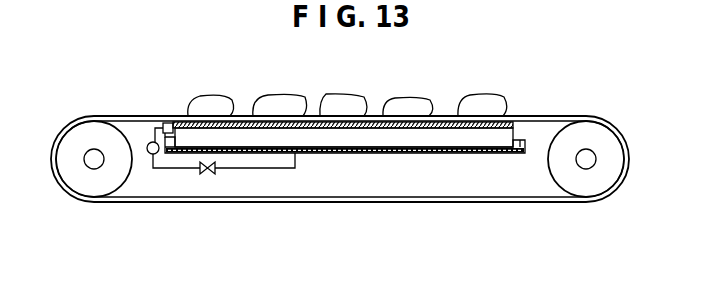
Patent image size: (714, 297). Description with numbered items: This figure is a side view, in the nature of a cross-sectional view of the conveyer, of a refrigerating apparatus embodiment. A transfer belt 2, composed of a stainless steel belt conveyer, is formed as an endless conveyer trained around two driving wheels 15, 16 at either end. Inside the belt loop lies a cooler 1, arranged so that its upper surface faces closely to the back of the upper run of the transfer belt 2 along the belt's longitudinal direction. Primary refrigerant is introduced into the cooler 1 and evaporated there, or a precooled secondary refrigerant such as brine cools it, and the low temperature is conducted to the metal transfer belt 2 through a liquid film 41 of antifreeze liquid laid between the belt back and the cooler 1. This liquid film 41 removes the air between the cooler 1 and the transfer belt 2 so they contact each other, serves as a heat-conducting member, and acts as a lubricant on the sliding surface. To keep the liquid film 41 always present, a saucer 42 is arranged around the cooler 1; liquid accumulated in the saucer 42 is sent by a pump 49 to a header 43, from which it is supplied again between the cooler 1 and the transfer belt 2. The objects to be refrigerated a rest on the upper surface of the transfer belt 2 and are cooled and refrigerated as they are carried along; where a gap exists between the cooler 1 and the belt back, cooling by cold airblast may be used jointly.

The cooler 1 is at (442, 133).
The transfer belt 2 is at (538, 116).
The driving wheel 15 is at (72, 137).
The driving wheel 16 is at (605, 133).
The liquid film 41 is at (378, 123).
The saucer 42 is at (457, 153).
The header 43 is at (167, 123).
The pump 49 is at (152, 154).
The object to be refrigerated a is at (325, 95).